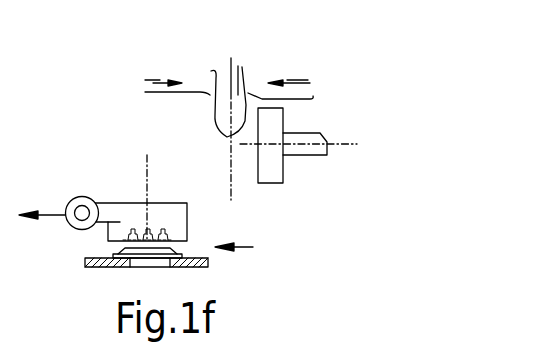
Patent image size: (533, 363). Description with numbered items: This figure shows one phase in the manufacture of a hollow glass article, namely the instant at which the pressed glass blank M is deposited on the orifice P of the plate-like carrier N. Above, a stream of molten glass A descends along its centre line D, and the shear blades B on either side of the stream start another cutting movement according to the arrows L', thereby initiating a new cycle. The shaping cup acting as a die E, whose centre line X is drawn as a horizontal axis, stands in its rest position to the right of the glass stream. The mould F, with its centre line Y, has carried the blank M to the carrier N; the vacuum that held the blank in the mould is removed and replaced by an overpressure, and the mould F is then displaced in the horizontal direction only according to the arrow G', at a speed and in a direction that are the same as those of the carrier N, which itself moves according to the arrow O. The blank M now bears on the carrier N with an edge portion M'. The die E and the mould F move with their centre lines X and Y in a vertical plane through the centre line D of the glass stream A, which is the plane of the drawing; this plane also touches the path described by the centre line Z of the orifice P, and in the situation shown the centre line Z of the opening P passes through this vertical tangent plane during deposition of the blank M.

The centre line of the glass stream D is at (228, 118).
The stream of molten glass A is at (240, 80).
The arrows of cutting movement of shear blades L' is at (227, 73).
The shear blades B is at (167, 93).
The die E is at (272, 184).
The centre line of the die X is at (185, 145).
The centre line of the mould Y is at (147, 187).
The mould F is at (121, 202).
The arrow of horizontal movement of the mould G' is at (42, 227).
The edge portion of the blank M' is at (199, 217).
The blank M is at (118, 247).
The plate-like carrier N is at (93, 263).
The orifice P is at (132, 262).
The centre line of the orifice Z is at (146, 265).
The arrow of carrier movement O is at (234, 235).